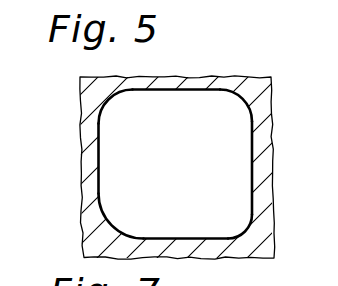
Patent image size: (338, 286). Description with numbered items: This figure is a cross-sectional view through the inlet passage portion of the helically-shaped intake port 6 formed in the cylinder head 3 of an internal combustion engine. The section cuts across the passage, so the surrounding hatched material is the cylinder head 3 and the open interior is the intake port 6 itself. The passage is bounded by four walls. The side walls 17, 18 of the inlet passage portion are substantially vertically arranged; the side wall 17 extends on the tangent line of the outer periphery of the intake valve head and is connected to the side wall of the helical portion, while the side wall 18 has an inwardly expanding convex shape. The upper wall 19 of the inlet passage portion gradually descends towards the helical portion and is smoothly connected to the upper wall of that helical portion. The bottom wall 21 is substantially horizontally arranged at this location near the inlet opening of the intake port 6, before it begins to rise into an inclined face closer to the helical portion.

The cylinder head 3 is at (262, 97).
The helically-shaped intake port 6 is at (178, 166).
The side wall of the inlet passage portion 17 is at (254, 156).
The side wall of the inlet passage portion 18 is at (100, 160).
The upper wall of the inlet passage portion 19 is at (192, 87).
The bottom wall of the inlet passage portion 21 is at (195, 241).